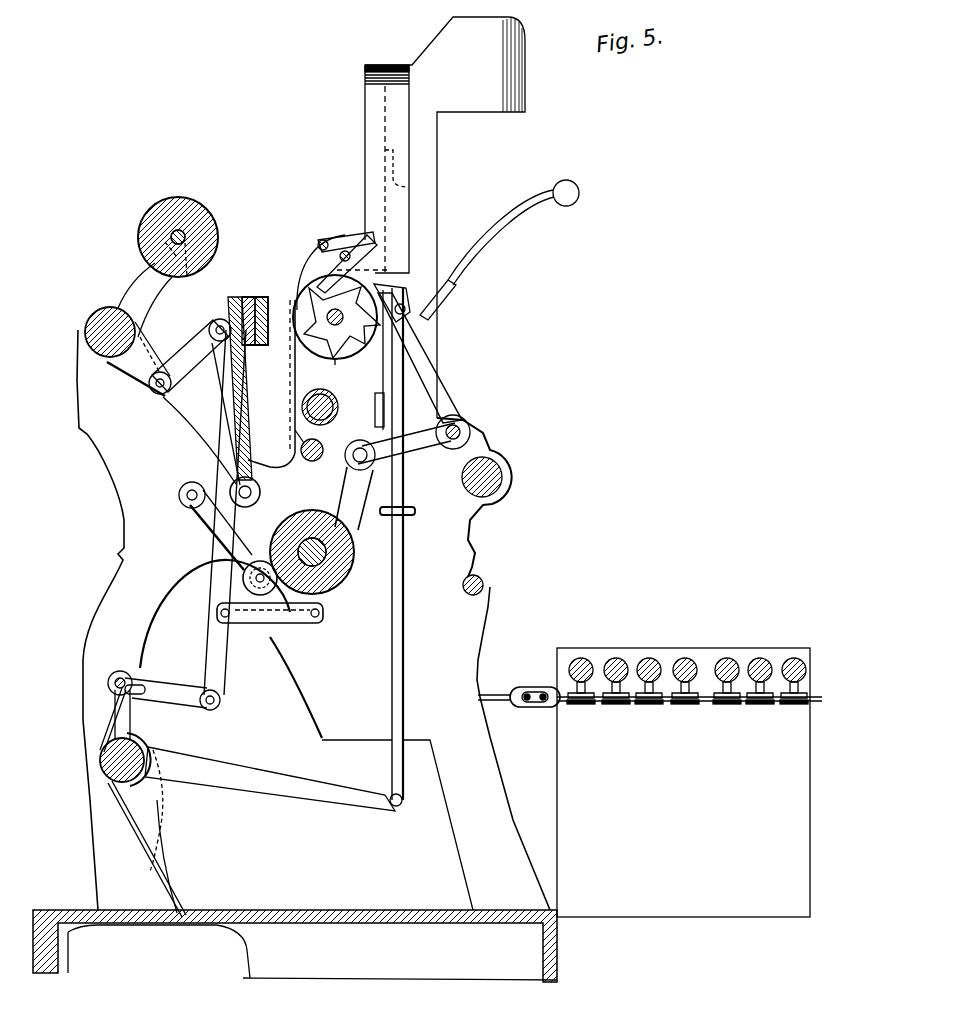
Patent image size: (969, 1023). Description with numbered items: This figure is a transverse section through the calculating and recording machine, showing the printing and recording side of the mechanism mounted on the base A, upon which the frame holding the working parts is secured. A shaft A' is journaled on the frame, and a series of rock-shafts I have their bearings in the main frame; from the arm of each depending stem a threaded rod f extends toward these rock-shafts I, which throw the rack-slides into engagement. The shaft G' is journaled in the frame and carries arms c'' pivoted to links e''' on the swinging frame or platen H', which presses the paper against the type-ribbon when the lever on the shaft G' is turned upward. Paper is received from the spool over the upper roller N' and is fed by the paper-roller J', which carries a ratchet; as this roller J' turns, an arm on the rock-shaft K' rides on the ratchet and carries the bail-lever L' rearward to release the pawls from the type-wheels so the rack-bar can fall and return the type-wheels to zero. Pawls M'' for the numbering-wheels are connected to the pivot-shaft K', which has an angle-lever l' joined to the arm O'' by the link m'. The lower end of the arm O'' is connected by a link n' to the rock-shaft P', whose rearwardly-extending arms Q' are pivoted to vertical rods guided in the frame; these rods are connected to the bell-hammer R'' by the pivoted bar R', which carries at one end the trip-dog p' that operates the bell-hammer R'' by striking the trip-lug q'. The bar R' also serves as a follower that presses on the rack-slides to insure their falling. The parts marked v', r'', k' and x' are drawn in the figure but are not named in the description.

The base A is at (295, 891).
The shaft A' is at (490, 584).
The rock-shaft I is at (590, 648).
The upper roller N' is at (189, 237).
The shaft G' is at (110, 351).
The arm c'' is at (171, 403).
The link e''' is at (196, 402).
The swinging frame or platen H' is at (249, 402).
The bail-lever L' is at (314, 351).
The pawl v' is at (372, 221).
The wheel rim r'' is at (347, 373).
The trip-dog p' is at (393, 301).
The pivoted bar R' is at (512, 250).
The bell-hammer R'' is at (578, 195).
The pawl M'' is at (429, 358).
The trip-lug q' is at (366, 363).
The rock-shaft or pivot-shaft K' is at (315, 433).
The pivot k' is at (453, 442).
The paper-roller or feed-roller J' is at (312, 541).
The angle-lever l' is at (395, 483).
The roller x' is at (228, 538).
The arm O'' is at (310, 547).
The link m' is at (270, 629).
The link n' is at (177, 529).
The rock-shaft P' is at (143, 802).
The arm Q' is at (270, 779).
The threaded rod f is at (519, 688).